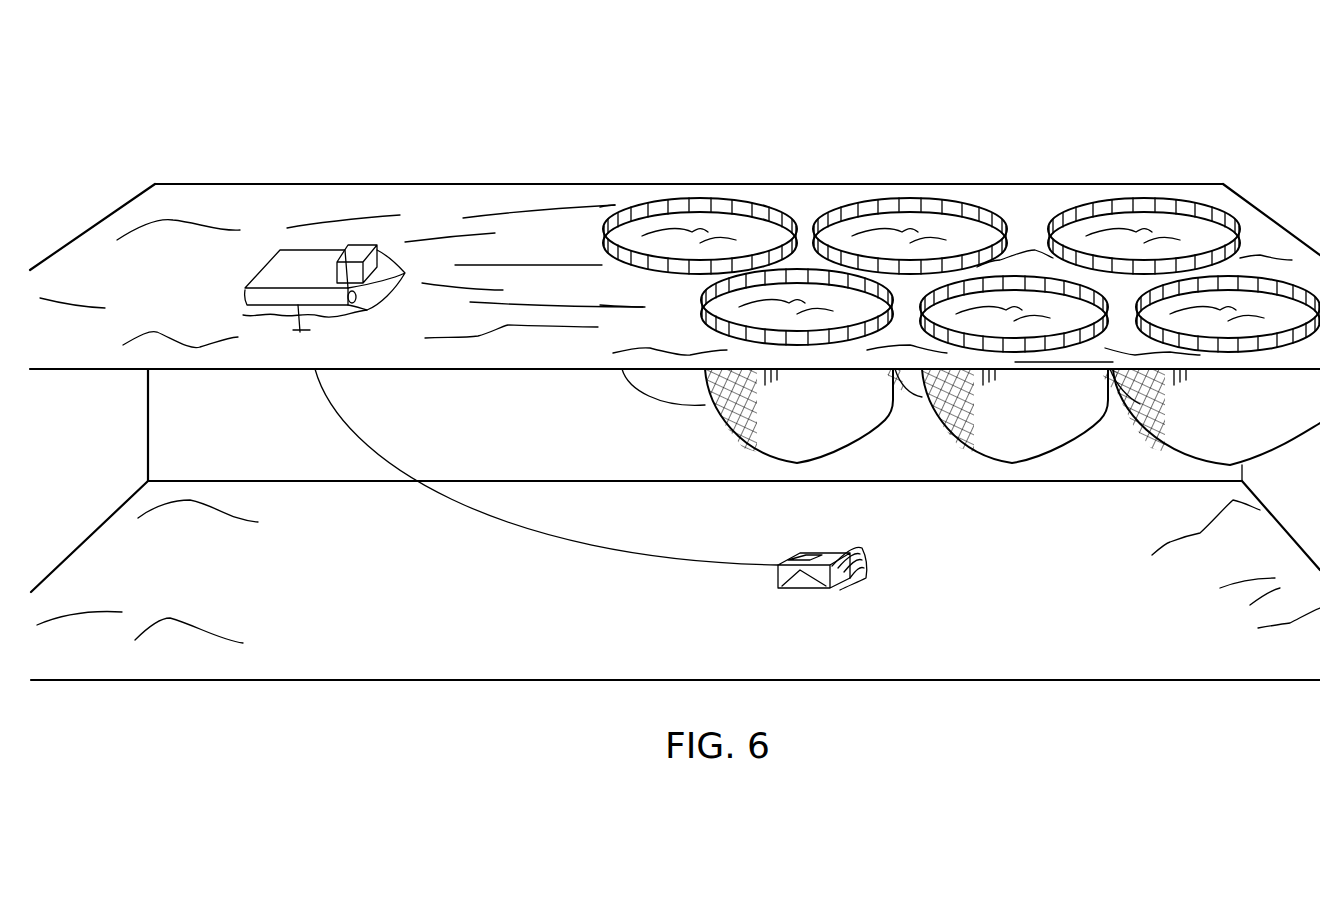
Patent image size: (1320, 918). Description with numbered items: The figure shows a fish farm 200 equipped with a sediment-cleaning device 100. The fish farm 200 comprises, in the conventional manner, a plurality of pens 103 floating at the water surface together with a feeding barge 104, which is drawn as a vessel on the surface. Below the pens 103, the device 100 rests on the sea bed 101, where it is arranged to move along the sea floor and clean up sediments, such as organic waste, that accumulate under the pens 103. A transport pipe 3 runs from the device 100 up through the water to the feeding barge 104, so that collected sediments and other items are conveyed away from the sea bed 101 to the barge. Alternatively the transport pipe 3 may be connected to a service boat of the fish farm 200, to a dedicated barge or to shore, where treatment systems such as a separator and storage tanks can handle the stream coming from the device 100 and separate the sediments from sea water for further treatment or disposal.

The fish farm 200 is at (243, 108).
The feeding barge 104 is at (305, 246).
The pen 103 is at (688, 220).
The transport pipe 3 is at (510, 532).
The device 100 is at (826, 590).
The sea bed 101 is at (1057, 609).